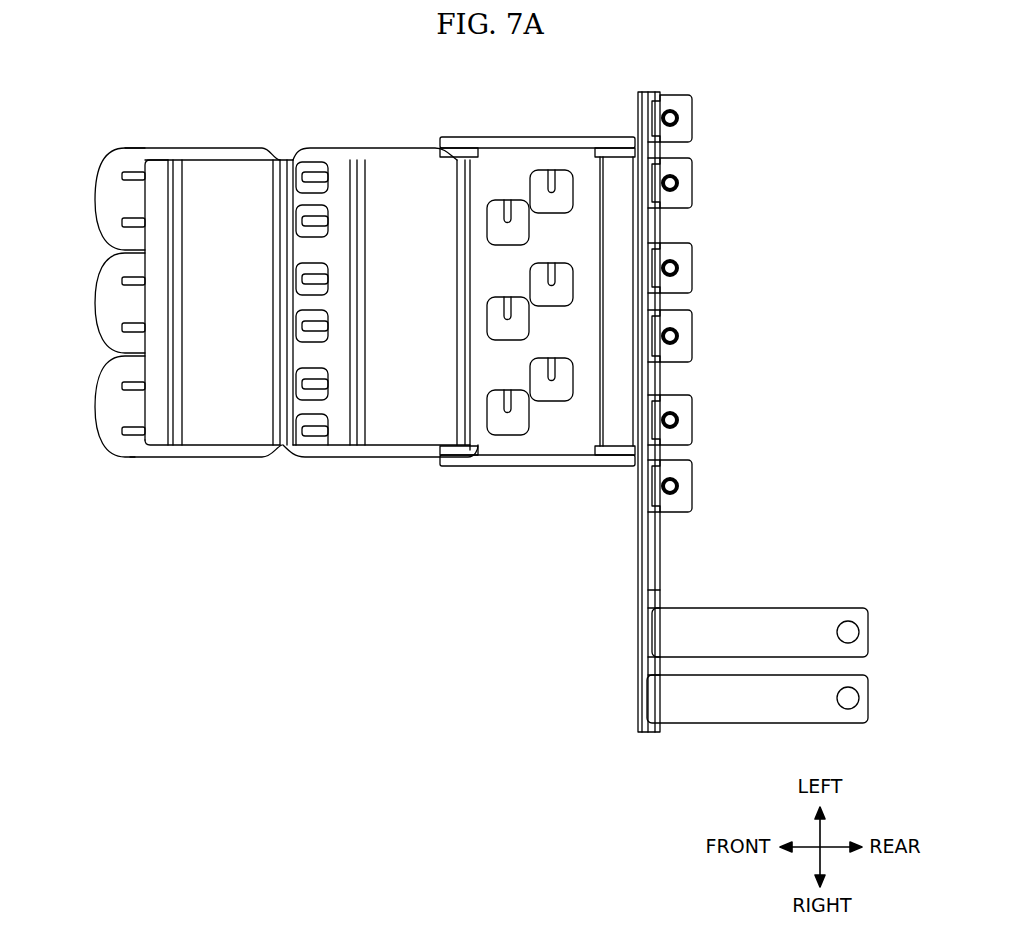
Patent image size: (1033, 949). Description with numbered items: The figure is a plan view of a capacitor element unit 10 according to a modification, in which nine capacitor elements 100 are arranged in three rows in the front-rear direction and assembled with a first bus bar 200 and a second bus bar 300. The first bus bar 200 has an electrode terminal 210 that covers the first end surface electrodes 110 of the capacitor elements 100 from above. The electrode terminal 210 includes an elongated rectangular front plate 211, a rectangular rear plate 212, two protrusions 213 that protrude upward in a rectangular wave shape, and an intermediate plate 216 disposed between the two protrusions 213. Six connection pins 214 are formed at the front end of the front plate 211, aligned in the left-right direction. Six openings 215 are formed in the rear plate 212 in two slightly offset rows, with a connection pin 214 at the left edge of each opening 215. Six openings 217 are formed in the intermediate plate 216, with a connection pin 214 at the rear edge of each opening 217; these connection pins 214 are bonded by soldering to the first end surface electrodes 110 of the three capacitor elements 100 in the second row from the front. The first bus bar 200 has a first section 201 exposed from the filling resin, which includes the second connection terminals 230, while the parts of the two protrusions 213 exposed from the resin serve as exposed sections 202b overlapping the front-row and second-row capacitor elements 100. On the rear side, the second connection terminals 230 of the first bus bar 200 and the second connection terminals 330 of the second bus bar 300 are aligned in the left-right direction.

The capacitor element unit 10 is at (789, 172).
The capacitor element 100 is at (137, 462).
The first end surface electrode 110 is at (185, 458).
The first bus bar 200 is at (505, 470).
The first section 201 is at (632, 470).
The exposed section 202b is at (237, 457).
The electrode terminal 210 is at (272, 153).
The front plate 211 is at (157, 170).
The rear plate 212 is at (515, 165).
The protrusion 213 is at (220, 177).
The connection pin 214 is at (125, 385).
The opening 215 is at (550, 402).
The intermediate plate 216 is at (340, 170).
The opening 217 is at (303, 384).
The second connection terminal 230 is at (693, 118).
The second bus bar 300 is at (662, 572).
The second connection terminal 330 is at (693, 182).